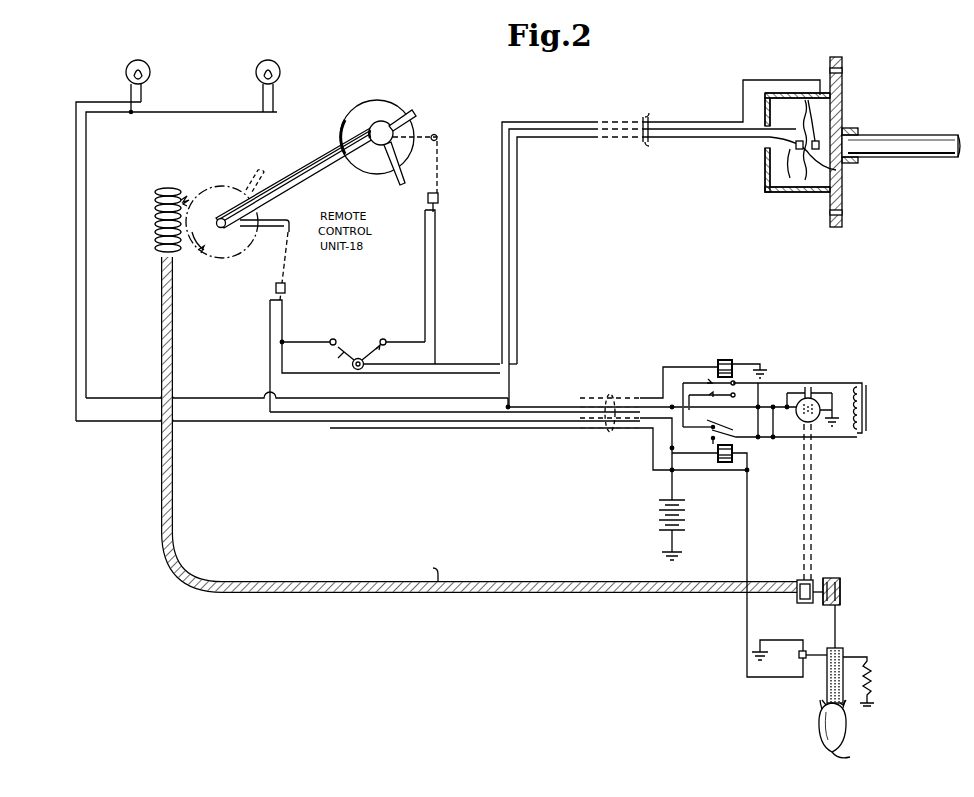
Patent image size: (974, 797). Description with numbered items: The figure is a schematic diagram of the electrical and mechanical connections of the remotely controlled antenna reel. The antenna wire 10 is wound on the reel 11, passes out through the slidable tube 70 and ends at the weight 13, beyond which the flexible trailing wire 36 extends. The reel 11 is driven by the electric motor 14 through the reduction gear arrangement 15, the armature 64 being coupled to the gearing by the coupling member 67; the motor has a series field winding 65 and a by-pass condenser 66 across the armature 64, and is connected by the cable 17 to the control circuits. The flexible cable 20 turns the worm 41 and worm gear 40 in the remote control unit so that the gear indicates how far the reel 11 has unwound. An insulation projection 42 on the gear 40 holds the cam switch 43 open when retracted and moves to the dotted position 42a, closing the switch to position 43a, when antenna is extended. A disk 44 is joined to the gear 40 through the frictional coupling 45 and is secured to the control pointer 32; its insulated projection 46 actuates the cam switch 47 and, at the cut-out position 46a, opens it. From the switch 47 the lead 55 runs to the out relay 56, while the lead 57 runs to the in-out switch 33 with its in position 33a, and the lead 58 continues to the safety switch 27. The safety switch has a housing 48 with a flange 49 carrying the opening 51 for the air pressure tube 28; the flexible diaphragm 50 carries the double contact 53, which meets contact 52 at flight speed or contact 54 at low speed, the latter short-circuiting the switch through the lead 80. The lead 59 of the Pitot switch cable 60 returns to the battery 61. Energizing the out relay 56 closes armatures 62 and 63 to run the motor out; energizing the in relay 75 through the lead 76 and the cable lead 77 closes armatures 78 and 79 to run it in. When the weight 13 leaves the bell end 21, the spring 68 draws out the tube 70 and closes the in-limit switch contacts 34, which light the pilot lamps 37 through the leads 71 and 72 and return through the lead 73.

The pilot lamps 37 is at (150, 66).
The connection lead 73 is at (86, 338).
The cable lead 77 is at (376, 392).
The lead 76 is at (362, 422).
The connection lead 72 is at (415, 429).
The worm 41 is at (156, 225).
The flexible cable 20 is at (173, 476).
The worm gear 40 is at (216, 258).
The dotted position of projection 42a is at (252, 178).
The frictional coupling 45 is at (300, 170).
The disk 44 is at (388, 106).
The control pointer 32 is at (405, 118).
The insulated projection 46 is at (395, 182).
The dotted position of projection 46a is at (422, 151).
The cam switch 47 is at (440, 193).
The connection lead 57 is at (424, 262).
The insulation nib or projection 42 is at (278, 219).
The dotted position of cam switch 43a is at (266, 266).
The cam switch 43 is at (286, 290).
The in-out switch 33 is at (372, 366).
The closed dotted position of in-out switch 33a is at (345, 349).
The connection lead 55 is at (437, 353).
The lead 80 is at (718, 114).
The Pitot switch cable 60 is at (653, 123).
The connection lead 59 is at (728, 132).
The connection lead 58 is at (678, 139).
The safety switch 27 is at (759, 181).
The flange 49 is at (836, 229).
The air pressure tube 28 is at (920, 136).
The opening 51 is at (858, 129).
The double contact 53 is at (840, 170).
The relay contact 52 is at (770, 168).
The relay contact 54 is at (838, 120).
The flexible diaphragm 50 is at (804, 185).
The housing 48 is at (790, 180).
The cable 17 is at (610, 395).
The out relay 56 is at (716, 362).
The armature circuit 62 is at (707, 400).
The armature circuit 63 is at (709, 400).
The armature 64 is at (800, 418).
The by-pass condenser 66 is at (814, 390).
The armature 79 is at (720, 424).
The armature 78 is at (748, 440).
The series field winding 65 is at (866, 387).
The electric motor 14 is at (852, 418).
The in relay 75 is at (716, 455).
The battery 61 is at (658, 514).
The connection lead 71 is at (748, 533).
The coupling member 67 is at (814, 479).
The reduction gear arrangement 15 is at (800, 604).
The reel 11 is at (840, 584).
The antenna wire 10 is at (836, 622).
The slidable tube 70 is at (843, 648).
The spring 68 is at (868, 657).
The bell end 21 is at (846, 708).
The weight 13 is at (822, 735).
The flexible trailing wire 36 is at (851, 750).
The in-limit switch contacts 34 is at (798, 656).